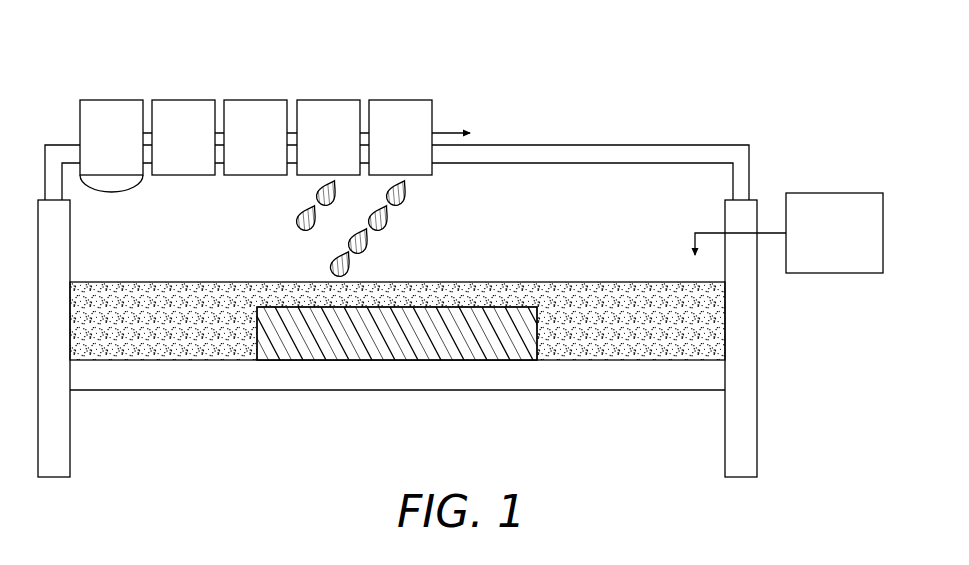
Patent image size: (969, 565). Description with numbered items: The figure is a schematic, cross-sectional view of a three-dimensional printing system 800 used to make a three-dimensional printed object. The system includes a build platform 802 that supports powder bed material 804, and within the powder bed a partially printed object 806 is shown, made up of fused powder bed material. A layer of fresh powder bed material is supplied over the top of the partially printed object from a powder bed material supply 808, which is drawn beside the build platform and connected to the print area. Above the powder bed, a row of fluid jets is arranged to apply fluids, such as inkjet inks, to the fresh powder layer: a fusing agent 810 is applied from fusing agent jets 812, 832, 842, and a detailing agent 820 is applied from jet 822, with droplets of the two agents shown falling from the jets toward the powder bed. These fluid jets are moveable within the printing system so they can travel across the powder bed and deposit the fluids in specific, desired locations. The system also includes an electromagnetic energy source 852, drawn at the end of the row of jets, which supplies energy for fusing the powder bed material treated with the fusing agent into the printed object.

The 3D printing system 800 is at (92, 58).
The build platform 802 is at (630, 382).
The powder bed material 804 is at (168, 340).
The partially printed object 806 is at (400, 348).
The powder bed material supply 808 is at (854, 245).
The fusing agent 810 is at (392, 222).
The fusing agent jet 812 is at (420, 147).
The detailing agent 820 is at (298, 225).
The detailing agent jet 822 is at (348, 147).
The fusing agent jet 832 is at (275, 147).
The fusing agent jet 842 is at (203, 147).
The electromagnetic energy source 852 is at (131, 147).